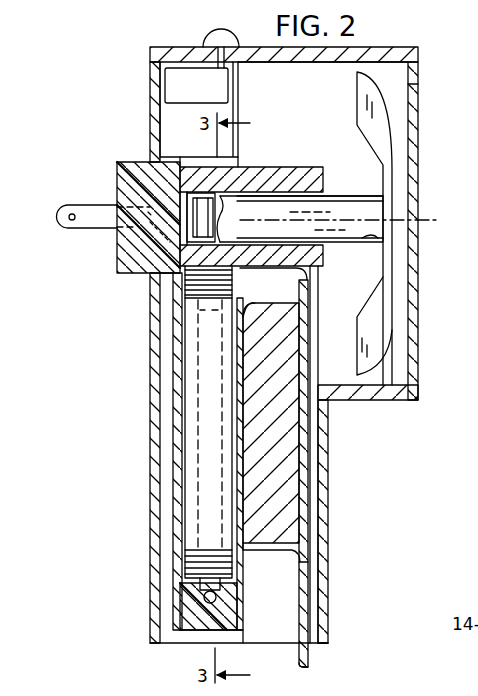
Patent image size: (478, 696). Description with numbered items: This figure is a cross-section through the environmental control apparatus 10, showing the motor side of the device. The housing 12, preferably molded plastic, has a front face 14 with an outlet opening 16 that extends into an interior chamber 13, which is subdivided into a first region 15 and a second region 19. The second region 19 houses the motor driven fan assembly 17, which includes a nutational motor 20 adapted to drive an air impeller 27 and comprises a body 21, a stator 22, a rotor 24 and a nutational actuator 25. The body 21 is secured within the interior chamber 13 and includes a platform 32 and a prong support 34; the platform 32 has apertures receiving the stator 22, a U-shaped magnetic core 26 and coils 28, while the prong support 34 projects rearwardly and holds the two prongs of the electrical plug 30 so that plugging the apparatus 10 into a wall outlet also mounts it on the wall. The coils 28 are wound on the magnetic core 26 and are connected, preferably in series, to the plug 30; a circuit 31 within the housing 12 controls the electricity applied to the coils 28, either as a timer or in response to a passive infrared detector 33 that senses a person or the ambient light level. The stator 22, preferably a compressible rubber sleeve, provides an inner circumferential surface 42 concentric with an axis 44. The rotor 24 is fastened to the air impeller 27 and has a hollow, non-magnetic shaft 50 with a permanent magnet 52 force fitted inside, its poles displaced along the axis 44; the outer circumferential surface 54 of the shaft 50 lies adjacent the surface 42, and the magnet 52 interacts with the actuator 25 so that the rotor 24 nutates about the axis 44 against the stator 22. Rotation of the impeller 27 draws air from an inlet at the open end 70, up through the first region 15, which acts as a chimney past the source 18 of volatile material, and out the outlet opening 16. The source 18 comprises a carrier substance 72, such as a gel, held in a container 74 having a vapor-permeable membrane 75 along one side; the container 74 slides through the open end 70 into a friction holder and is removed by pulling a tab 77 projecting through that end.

The environmental control apparatus 10 is at (354, 424).
The housing 12 is at (150, 70).
The interior chamber 13 is at (396, 356).
The front face 14 is at (328, 510).
The first region 15 is at (280, 598).
The outlet opening 16 is at (418, 84).
The fan assembly 17 is at (255, 160).
The source of volatile material 18 is at (286, 522).
The second region 19 is at (316, 91).
The nutational motor 20 is at (208, 282).
The body 21 is at (190, 607).
The stator 22 is at (300, 172).
The rotor 24 is at (356, 216).
The nutational actuator 25 is at (212, 357).
The magnetic core 26 is at (204, 596).
The air impeller 27 is at (377, 128).
The coils 28 is at (207, 427).
The electrical plug 30 is at (88, 206).
The circuit 31 is at (206, 95).
The platform 32 is at (180, 495).
The passive infrared detector 33 is at (210, 28).
The prong support 34 is at (143, 170).
The inner circumferential surface 42 is at (269, 174).
The axis 44 is at (438, 220).
The shaft 50 is at (370, 238).
The permanent magnet 52 is at (211, 241).
The outer circumferential surface 54 is at (336, 266).
The open end 70 is at (326, 644).
The carrier substance 72 is at (288, 491).
The container 74 is at (308, 575).
The membrane 75 is at (304, 458).
The tab 77 is at (304, 668).